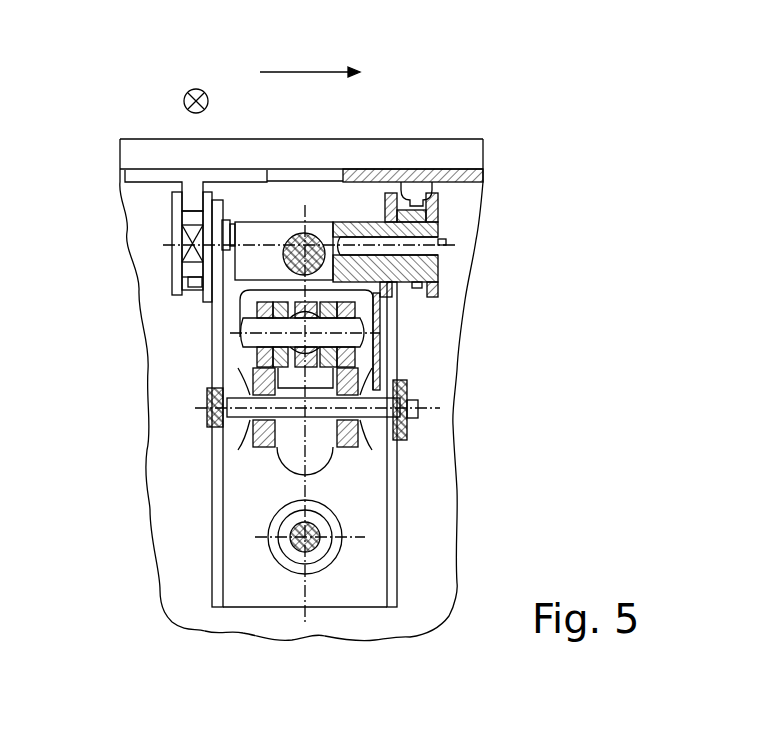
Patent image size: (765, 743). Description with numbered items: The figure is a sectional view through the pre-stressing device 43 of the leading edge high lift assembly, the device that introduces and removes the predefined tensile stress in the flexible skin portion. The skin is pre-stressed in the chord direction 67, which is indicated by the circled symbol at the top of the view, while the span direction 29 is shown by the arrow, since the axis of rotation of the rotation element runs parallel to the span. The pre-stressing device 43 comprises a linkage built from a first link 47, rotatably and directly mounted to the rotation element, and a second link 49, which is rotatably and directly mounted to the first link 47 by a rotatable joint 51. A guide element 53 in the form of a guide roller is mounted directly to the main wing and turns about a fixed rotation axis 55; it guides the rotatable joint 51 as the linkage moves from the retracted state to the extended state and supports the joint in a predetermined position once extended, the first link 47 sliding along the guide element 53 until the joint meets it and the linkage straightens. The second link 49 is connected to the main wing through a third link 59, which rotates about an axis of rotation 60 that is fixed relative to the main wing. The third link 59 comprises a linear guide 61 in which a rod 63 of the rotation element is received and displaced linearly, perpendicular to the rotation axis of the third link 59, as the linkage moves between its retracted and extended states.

The span direction 29 is at (307, 70).
The pre-stressing device 43 is at (489, 273).
The first link 47 is at (366, 360).
The second link 49 is at (245, 290).
The rotatable joint 51 is at (243, 336).
The guide element 53 is at (353, 447).
The fixed rotation axis 55 is at (418, 408).
The third link 59 is at (261, 232).
The axis of rotation 60 is at (363, 242).
The linear guide 61 is at (321, 233).
The rod 63 is at (303, 232).
The chord direction 67 is at (195, 88).